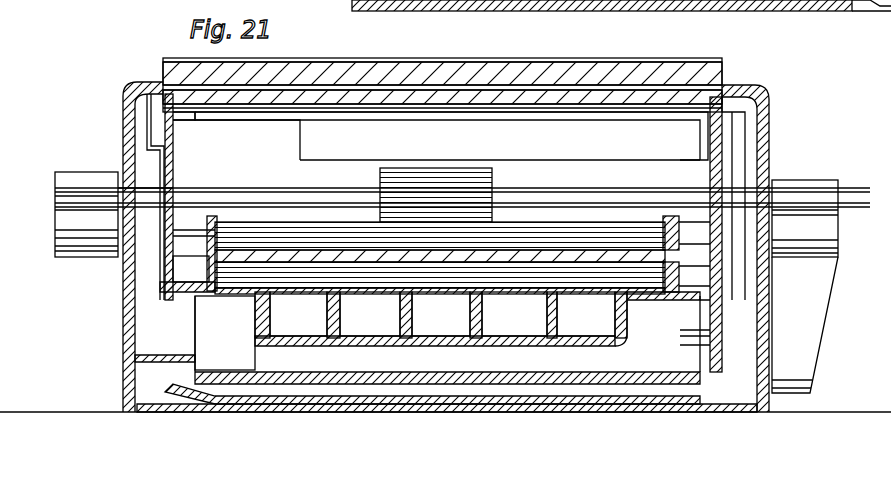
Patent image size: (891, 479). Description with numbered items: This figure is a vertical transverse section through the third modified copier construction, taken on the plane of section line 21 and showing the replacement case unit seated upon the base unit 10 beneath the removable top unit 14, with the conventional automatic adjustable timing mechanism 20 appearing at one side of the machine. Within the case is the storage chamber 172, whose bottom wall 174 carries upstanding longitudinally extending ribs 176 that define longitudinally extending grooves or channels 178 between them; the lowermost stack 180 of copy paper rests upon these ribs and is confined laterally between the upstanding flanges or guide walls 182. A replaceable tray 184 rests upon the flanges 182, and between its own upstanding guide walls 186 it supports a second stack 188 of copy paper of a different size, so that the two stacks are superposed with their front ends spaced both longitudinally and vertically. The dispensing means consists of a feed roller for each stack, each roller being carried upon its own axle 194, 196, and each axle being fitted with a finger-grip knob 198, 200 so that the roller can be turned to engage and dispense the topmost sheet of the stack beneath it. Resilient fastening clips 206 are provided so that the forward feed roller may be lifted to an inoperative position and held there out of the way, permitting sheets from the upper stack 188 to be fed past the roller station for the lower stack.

The base unit 10 is at (388, 6).
The section line 21 is at (518, 0).
The removable top unit 14 is at (636, 62).
The automatic adjustable timing mechanism 20 is at (786, 305).
The storage chamber 172 is at (619, 177).
The bottom wall 174 is at (200, 292).
The upstanding longitudinally extending ribs 176 is at (330, 330).
The longitudinally extending grooves or channels 178 is at (432, 334).
The lowermost stack of copy paper 180 is at (596, 284).
The upstanding flanges or guide walls 182 is at (187, 274).
The replaceable tray 184 is at (302, 246).
The upstanding guide walls 186 is at (226, 218).
The second stack of copy paper 188 is at (527, 244).
The axle 194 is at (514, 196).
The axle 196 is at (186, 232).
The finger-grip knob 198 is at (803, 192).
The finger-grip knob 200 is at (808, 240).
The resilient fastening clips 206 is at (706, 162).